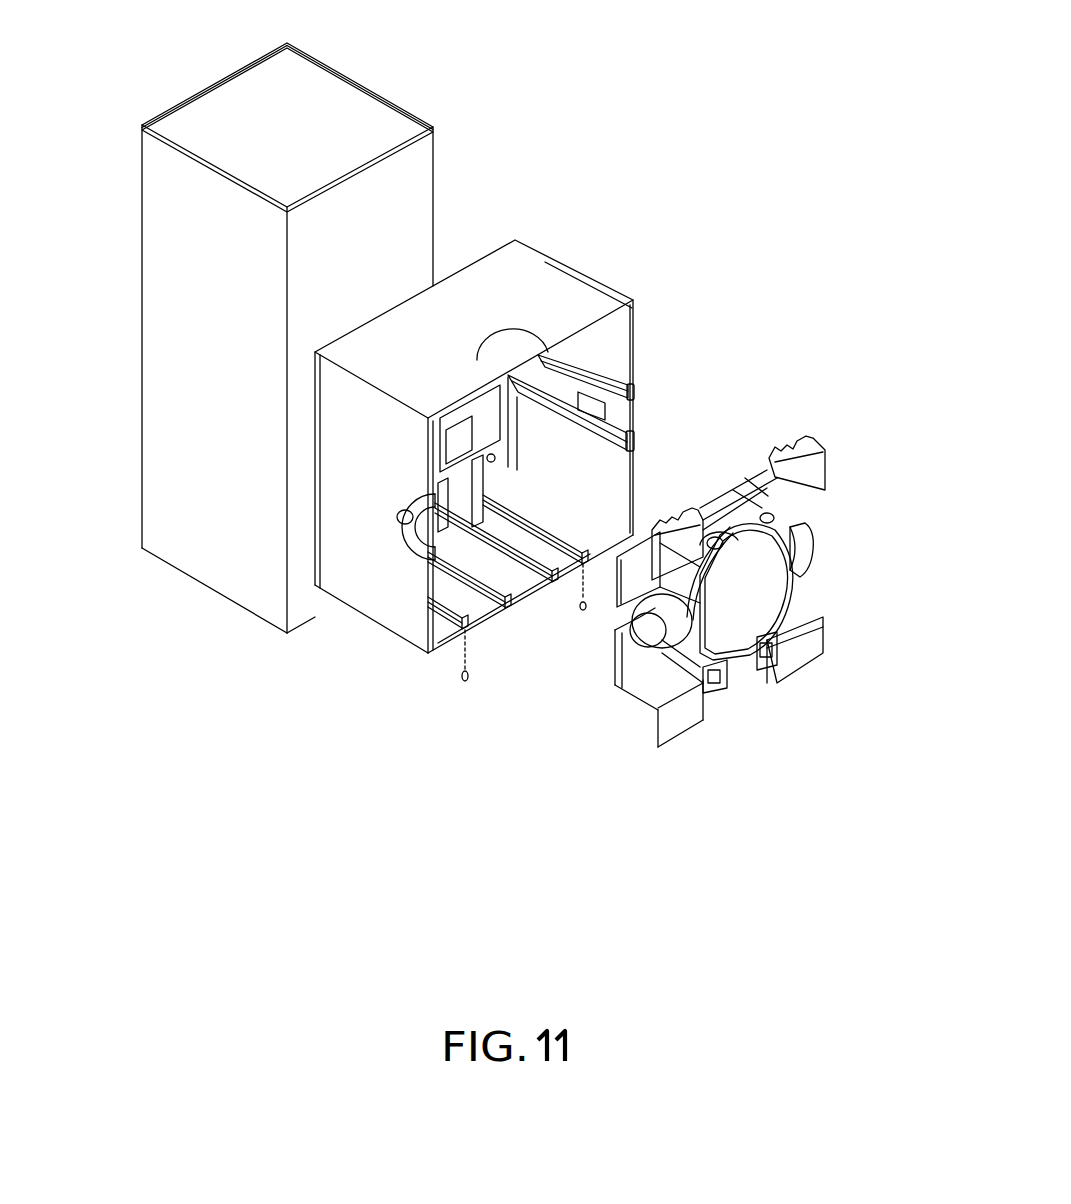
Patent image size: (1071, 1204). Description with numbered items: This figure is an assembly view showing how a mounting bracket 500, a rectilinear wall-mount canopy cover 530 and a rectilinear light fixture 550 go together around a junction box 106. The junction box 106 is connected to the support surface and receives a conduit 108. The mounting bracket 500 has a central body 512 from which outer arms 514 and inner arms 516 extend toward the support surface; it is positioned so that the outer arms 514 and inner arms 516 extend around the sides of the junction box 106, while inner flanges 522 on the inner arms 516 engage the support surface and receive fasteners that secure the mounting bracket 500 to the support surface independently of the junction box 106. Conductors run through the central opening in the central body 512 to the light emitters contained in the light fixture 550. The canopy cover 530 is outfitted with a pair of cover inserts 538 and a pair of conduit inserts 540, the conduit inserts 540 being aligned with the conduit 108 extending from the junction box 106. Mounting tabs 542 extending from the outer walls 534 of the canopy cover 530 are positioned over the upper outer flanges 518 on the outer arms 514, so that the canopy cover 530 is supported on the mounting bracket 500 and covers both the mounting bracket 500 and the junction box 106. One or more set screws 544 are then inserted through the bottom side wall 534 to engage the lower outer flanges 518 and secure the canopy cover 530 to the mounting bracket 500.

The rectilinear light fixture 550 is at (185, 100).
The rectilinear wall-mount canopy cover 530 is at (580, 273).
The cover inserts 538 is at (510, 330).
The mounting tabs 542 is at (633, 300).
The conduit inserts 540 is at (633, 432).
The outer walls 534 is at (398, 620).
The set screws 544 is at (460, 682).
The mounting bracket 500 is at (741, 630).
The outer arms 514 is at (637, 563).
The outer flanges 518 is at (815, 443).
The junction box 106 is at (792, 594).
The conduit 108 is at (812, 540).
The central body 512 is at (627, 682).
The inner arms 516 is at (693, 680).
The inner flanges 522 is at (727, 680).